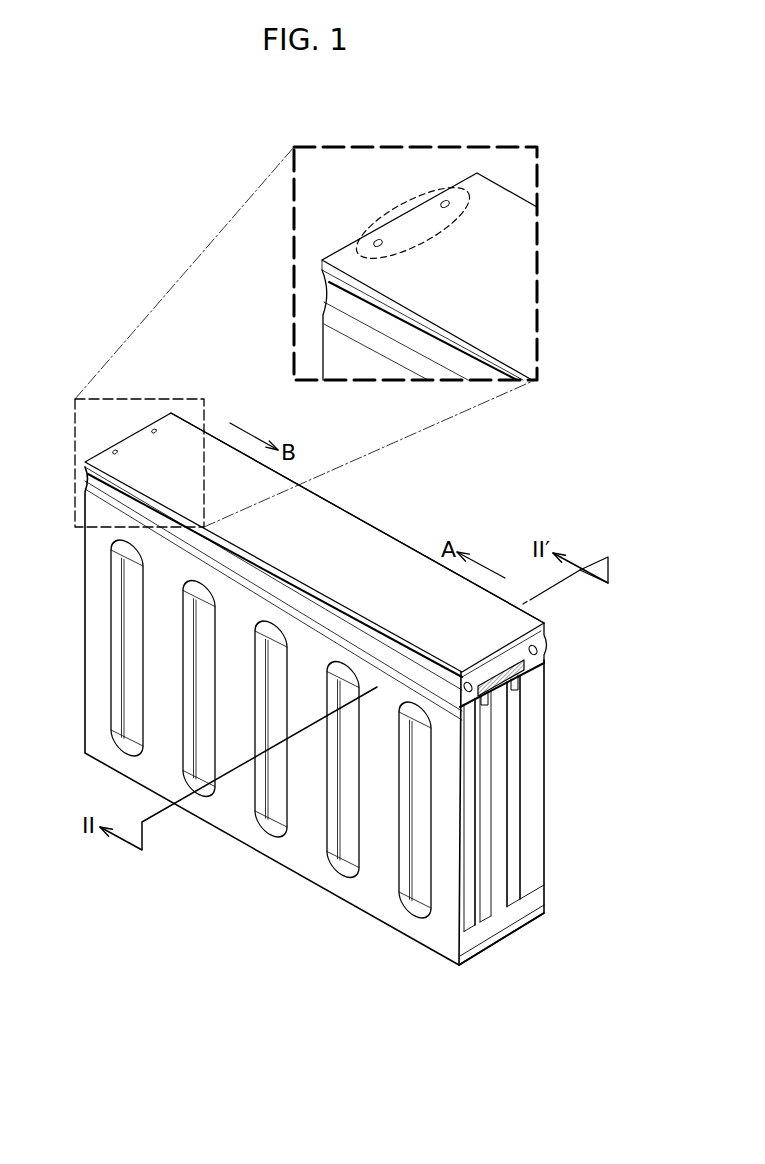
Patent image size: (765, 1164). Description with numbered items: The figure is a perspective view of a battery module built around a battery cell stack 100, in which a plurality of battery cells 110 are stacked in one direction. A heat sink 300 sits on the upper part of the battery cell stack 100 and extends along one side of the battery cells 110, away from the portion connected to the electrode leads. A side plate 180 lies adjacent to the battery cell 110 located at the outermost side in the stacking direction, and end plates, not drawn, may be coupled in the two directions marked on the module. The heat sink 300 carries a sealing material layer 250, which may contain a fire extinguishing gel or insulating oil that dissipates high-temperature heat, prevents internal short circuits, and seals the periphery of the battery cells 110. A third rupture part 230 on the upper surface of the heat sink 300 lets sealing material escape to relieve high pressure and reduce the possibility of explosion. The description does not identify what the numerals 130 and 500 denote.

The battery cell stack 100 is at (510, 813).
The battery cell 110 is at (502, 772).
The bottom frame 130 is at (500, 942).
The side plate 180 is at (307, 853).
The third rupture part 230 is at (402, 195).
The sealing material layer 250 is at (526, 666).
The heat sink 300 is at (532, 638).
The cover plate edge 500 is at (385, 527).